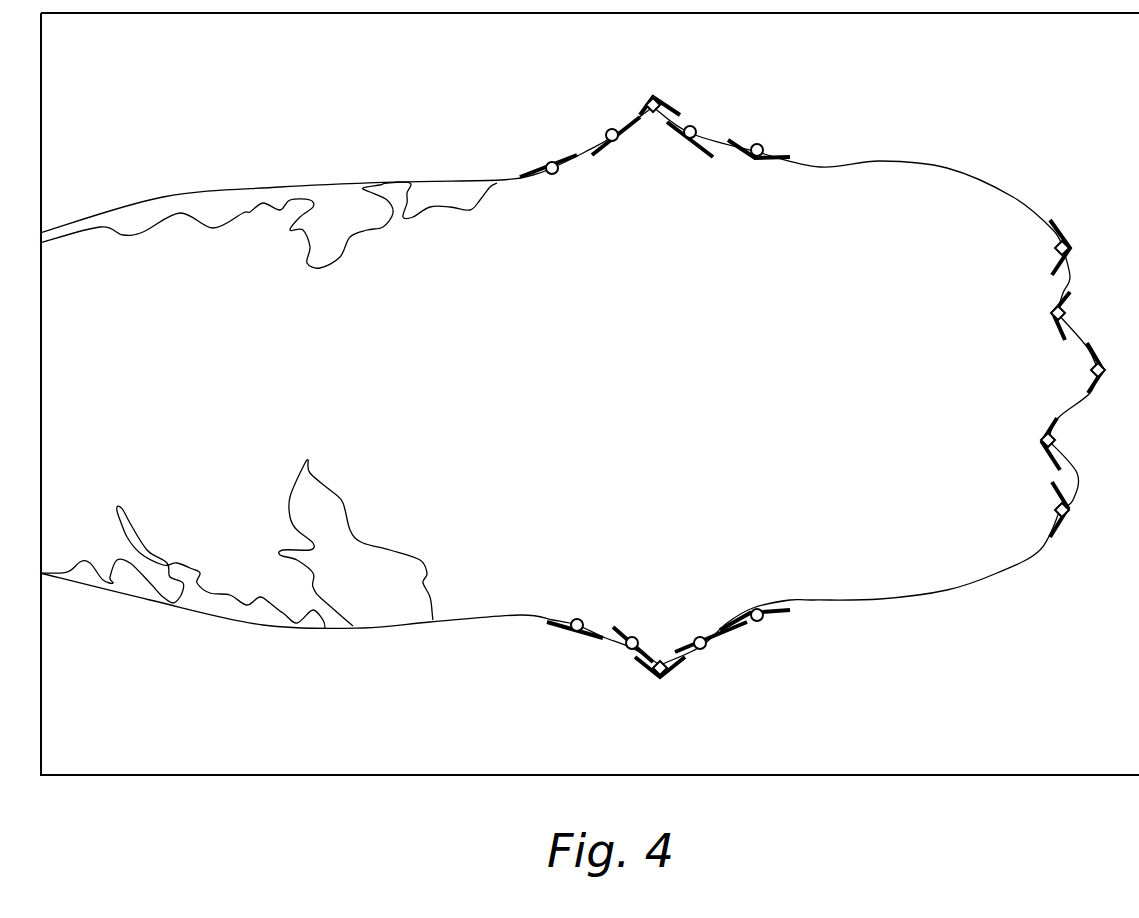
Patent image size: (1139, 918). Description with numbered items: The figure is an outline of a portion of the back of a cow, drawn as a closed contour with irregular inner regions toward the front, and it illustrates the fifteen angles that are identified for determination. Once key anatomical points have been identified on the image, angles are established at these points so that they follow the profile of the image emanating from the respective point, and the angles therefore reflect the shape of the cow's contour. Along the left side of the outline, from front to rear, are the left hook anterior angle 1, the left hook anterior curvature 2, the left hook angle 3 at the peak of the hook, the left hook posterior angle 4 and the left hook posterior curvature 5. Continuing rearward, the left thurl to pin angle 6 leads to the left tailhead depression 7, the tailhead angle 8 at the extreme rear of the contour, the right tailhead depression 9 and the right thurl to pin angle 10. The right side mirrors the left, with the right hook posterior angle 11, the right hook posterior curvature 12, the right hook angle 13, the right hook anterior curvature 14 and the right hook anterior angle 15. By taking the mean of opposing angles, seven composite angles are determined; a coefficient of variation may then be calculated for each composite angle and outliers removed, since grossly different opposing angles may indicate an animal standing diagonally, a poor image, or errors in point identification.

The left hook anterior angle 1 is at (548, 153).
The left hook anterior curvature 2 is at (611, 128).
The left hook angle 3 is at (660, 88).
The left hook posterior angle 4 is at (692, 127).
The left hook posterior curvature 5 is at (759, 133).
The left thurl to pin angle 6 is at (1075, 247).
The left tailhead depression 7 is at (1074, 316).
The tailhead angle 8 is at (1110, 368).
The right tailhead depression 9 is at (1066, 441).
The right thurl to pin angle 10 is at (1085, 509).
The right hook posterior angle 11 is at (757, 636).
The right hook posterior curvature 12 is at (711, 652).
The right hook angle 13 is at (662, 686).
The right hook anterior curvature 14 is at (625, 657).
The right hook anterior angle 15 is at (572, 644).